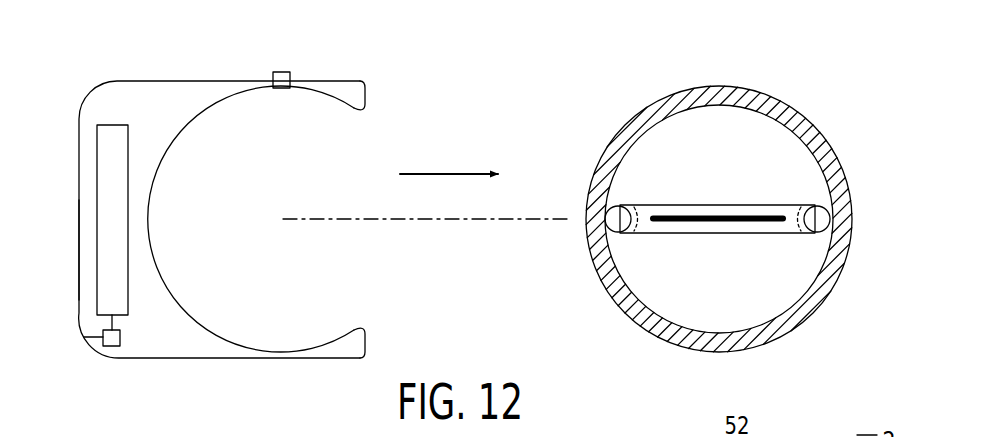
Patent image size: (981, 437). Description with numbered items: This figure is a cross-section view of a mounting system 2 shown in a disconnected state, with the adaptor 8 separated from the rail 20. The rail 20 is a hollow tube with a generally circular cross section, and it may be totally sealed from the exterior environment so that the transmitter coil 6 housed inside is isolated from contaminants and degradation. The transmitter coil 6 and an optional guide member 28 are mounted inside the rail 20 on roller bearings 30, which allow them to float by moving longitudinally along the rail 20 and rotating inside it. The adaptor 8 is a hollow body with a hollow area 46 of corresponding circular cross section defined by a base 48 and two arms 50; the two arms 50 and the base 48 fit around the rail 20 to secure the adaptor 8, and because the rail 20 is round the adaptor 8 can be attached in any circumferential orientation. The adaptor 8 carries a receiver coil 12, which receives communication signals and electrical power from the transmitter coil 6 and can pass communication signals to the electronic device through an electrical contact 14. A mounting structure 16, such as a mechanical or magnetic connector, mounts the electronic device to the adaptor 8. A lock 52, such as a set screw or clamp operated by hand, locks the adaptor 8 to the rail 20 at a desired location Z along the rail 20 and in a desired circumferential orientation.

The mounting system 2 is at (723, 190).
The transmitter coil 6 is at (727, 215).
The adaptor 8 is at (162, 100).
The receiver coil 12 is at (112, 174).
The electrical contact 14 is at (112, 348).
The mounting structure 16 is at (436, 76).
The rail 20 is at (812, 302).
The guide member 28 is at (690, 212).
The roller bearings 30 is at (606, 212).
The hollow area 46 is at (320, 157).
The base 48 is at (90, 245).
The arms 50 is at (352, 92).
The lock 52 is at (287, 72).
The location Z is at (587, 235).